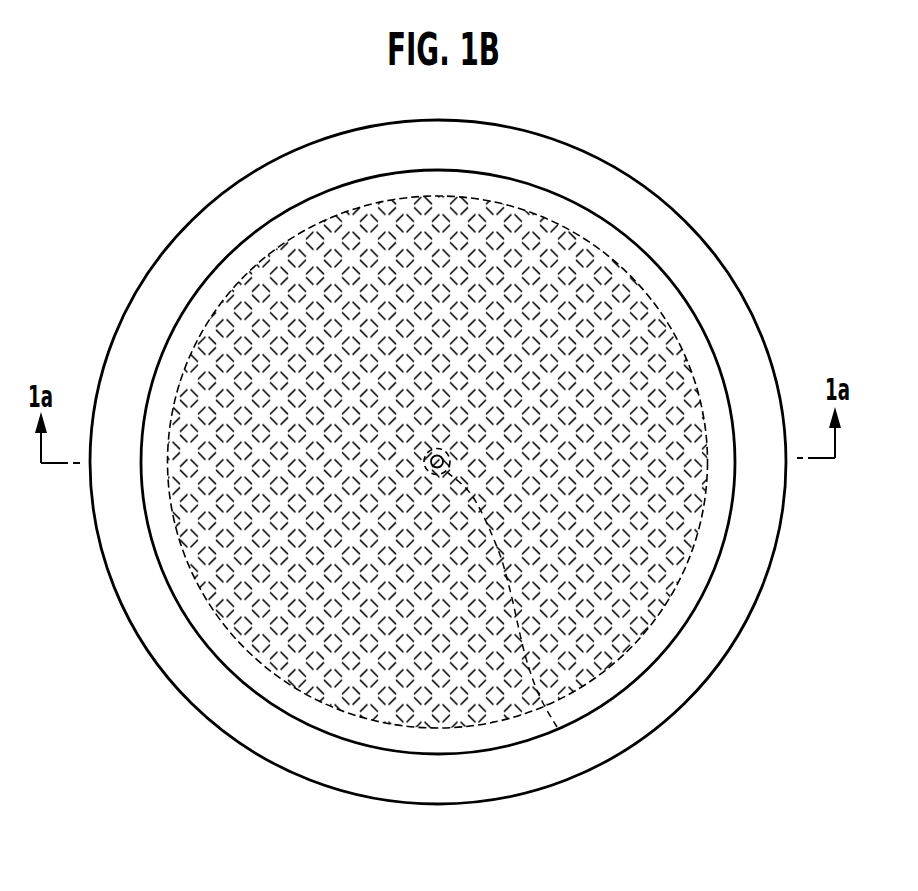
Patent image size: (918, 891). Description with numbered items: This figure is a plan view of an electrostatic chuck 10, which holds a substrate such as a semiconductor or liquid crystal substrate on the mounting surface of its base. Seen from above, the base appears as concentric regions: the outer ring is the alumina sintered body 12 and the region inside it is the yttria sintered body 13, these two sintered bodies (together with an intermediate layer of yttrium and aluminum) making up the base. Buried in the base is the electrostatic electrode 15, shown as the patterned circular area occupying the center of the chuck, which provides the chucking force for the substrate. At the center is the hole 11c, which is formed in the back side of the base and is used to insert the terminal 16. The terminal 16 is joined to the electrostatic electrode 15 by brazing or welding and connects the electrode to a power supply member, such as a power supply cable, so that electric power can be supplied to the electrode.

The electrostatic chuck 10 is at (170, 190).
The alumina sintered body 12 is at (740, 345).
The yttria sintered body 13 is at (665, 292).
The electrostatic electrode 15 is at (592, 267).
The hole 11c is at (453, 462).
The terminal 16 is at (557, 727).